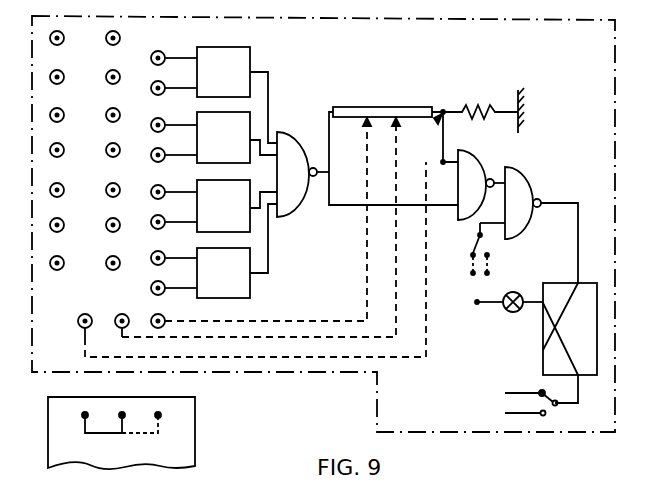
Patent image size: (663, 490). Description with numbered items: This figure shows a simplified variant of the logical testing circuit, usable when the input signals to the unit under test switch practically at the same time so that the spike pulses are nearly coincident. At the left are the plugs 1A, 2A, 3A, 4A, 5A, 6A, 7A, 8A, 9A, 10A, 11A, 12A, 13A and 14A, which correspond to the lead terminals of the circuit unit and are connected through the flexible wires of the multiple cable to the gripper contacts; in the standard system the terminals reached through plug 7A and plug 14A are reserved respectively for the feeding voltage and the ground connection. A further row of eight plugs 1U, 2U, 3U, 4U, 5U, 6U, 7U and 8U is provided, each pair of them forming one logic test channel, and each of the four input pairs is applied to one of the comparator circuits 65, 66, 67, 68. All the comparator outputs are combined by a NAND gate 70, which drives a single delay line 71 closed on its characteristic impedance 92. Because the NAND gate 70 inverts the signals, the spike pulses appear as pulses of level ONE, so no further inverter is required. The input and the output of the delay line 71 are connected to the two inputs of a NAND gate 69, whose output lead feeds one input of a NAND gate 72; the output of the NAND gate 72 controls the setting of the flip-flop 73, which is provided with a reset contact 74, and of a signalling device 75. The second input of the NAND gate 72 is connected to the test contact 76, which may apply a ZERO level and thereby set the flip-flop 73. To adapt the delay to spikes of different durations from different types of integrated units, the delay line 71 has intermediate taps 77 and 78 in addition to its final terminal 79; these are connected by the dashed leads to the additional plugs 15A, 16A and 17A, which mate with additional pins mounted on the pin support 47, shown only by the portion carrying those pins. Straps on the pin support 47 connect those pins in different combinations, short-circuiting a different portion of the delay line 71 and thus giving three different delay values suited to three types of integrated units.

The plug 1A is at (69, 39).
The plug 2A is at (69, 78).
The plug 3A is at (69, 116).
The plug 4A is at (69, 151).
The plug 5A is at (69, 191).
The plug 6A is at (69, 226).
The plug 7A is at (69, 264).
The plug 8A is at (125, 264).
The plug 9A is at (125, 226).
The plug 10A is at (129, 191).
The plug 11A is at (129, 151).
The plug 12A is at (129, 116).
The plug 13A is at (129, 78).
The plug 14A is at (129, 39).
The additional plug 15A is at (249, 259).
The additional plug 16A is at (253, 227).
The additional plug 17A is at (259, 222).
The plug 1U is at (174, 54).
The plug 2U is at (174, 84).
The plug 3U is at (174, 121).
The plug 4U is at (174, 151).
The plug 5U is at (174, 188).
The plug 6U is at (174, 218).
The plug 7U is at (174, 254).
The plug 8U is at (174, 284).
The pin support 47 is at (195, 425).
The comparator circuit 65 is at (247, 47).
The comparator circuit 66 is at (247, 112).
The comparator circuit 67 is at (247, 180).
The comparator circuit 68 is at (247, 298).
The NAND gate 69 is at (478, 153).
The NAND gate 70 is at (303, 167).
The delay line 71 is at (365, 107).
The NAND gate 72 is at (526, 175).
The flip-flop 73 is at (600, 276).
The reset contact 74 is at (550, 410).
The lamp 75 is at (495, 291).
The test contact 76 is at (474, 242).
The intermediate tap 77 is at (357, 129).
The intermediate tap 78 is at (387, 129).
The final terminal 79 is at (430, 127).
The characteristic impedance 92 is at (482, 100).